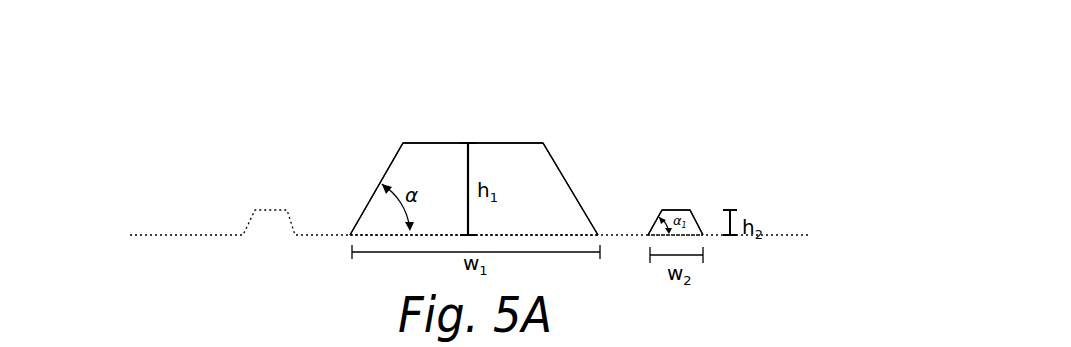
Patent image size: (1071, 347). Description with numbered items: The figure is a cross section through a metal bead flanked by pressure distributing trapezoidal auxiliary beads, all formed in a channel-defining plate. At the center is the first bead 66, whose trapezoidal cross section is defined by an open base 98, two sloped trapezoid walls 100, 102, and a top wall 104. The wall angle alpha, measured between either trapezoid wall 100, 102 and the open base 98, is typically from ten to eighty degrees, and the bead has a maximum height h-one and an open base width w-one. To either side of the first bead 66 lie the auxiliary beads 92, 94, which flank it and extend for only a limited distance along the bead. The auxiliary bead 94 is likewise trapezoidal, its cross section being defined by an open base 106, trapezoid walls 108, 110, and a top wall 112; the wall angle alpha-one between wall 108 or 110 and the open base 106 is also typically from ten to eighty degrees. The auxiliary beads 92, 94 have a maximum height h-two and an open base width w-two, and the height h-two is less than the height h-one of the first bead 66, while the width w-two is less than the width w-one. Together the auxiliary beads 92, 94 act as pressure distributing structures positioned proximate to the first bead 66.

The auxiliary bead 92 is at (272, 210).
The first bead 66 is at (543, 143).
The trapezoid wall 100 is at (385, 175).
The trapezoid wall 102 is at (567, 177).
The top wall 104 is at (437, 143).
The open base 98 is at (397, 235).
The auxiliary bead 94 is at (693, 210).
The trapezoid wall 108 is at (657, 218).
The trapezoid wall 110 is at (698, 218).
The top wall 112 is at (675, 208).
The open base 106 is at (673, 234).